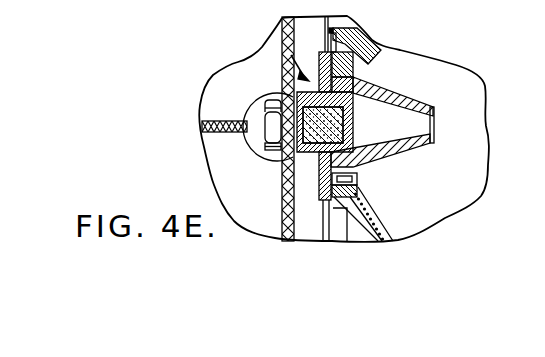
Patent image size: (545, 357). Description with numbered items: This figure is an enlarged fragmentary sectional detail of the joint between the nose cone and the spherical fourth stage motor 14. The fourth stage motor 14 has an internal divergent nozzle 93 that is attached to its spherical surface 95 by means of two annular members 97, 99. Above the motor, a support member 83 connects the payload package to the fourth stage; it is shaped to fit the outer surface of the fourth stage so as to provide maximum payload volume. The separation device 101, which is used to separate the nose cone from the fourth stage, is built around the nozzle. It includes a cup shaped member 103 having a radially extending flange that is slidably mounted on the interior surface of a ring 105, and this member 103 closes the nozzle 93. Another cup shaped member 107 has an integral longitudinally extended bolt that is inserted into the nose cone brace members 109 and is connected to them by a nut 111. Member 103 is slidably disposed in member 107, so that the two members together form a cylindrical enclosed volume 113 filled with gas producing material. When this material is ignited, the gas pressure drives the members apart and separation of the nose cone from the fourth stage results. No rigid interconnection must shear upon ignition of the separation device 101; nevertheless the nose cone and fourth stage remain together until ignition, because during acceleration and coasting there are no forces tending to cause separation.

The fourth stage motor 14 is at (467, 103).
The support member 83 is at (367, 35).
The internal divergent nozzle 93 is at (393, 95).
The spherical surface 95 is at (393, 222).
The annular member 97 is at (358, 180).
The annular member 99 is at (358, 192).
The separation device 101 is at (280, 45).
The cup shaped member 103 is at (320, 171).
The ring 105 is at (320, 199).
The cup shaped member 107 is at (281, 84).
The nose cone brace members 109 is at (209, 134).
The nut 111 is at (268, 151).
The cylindrical enclosed volume 113 is at (353, 124).